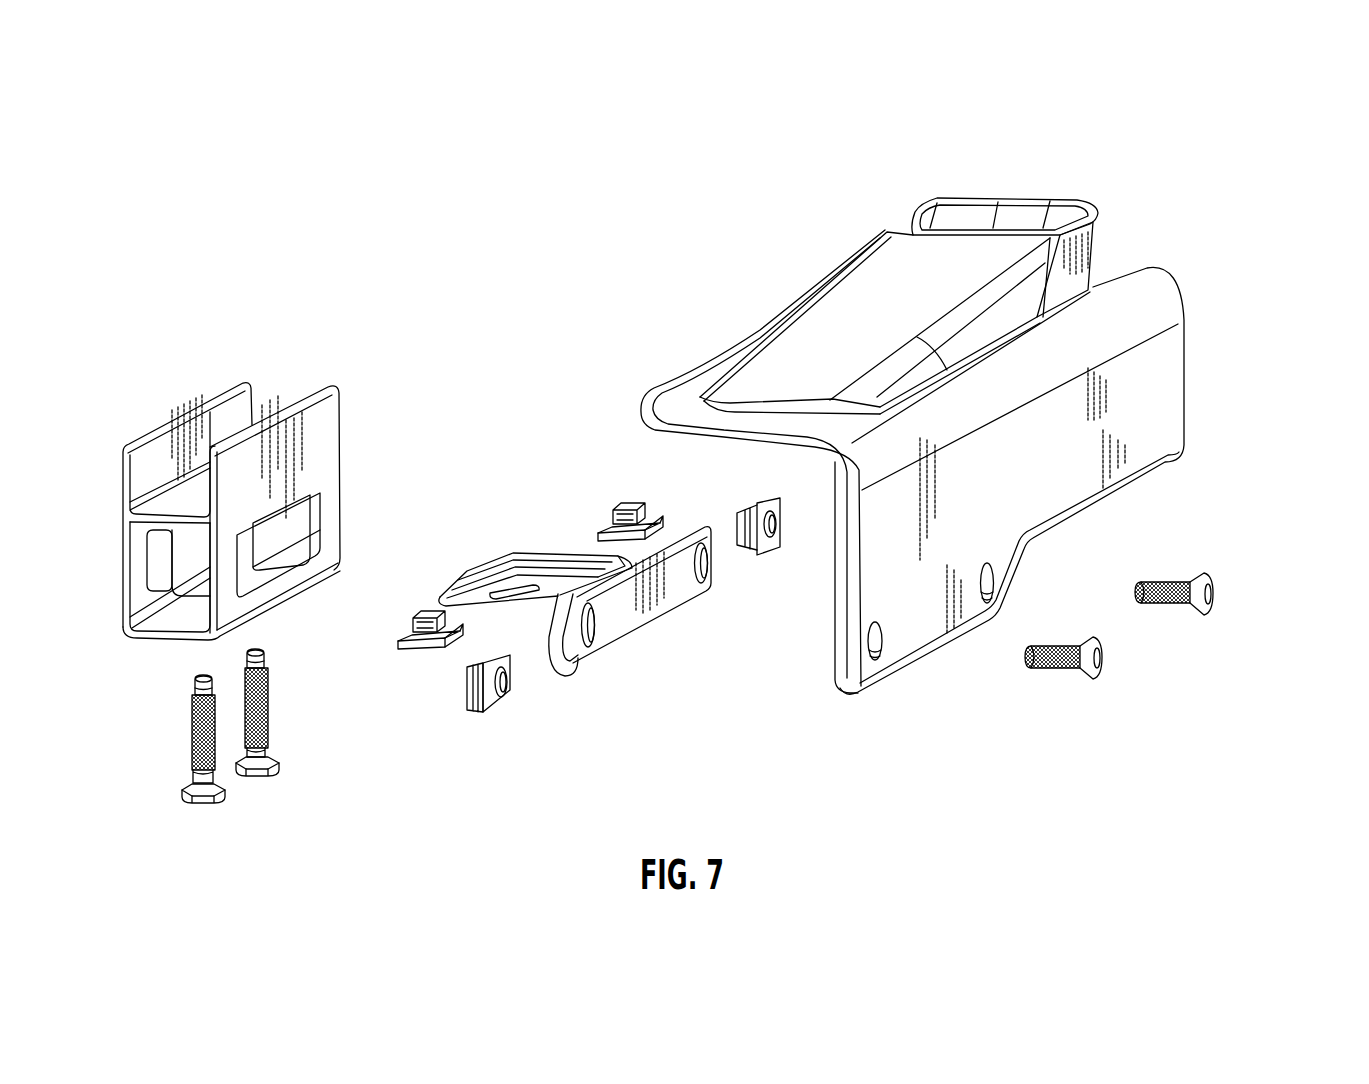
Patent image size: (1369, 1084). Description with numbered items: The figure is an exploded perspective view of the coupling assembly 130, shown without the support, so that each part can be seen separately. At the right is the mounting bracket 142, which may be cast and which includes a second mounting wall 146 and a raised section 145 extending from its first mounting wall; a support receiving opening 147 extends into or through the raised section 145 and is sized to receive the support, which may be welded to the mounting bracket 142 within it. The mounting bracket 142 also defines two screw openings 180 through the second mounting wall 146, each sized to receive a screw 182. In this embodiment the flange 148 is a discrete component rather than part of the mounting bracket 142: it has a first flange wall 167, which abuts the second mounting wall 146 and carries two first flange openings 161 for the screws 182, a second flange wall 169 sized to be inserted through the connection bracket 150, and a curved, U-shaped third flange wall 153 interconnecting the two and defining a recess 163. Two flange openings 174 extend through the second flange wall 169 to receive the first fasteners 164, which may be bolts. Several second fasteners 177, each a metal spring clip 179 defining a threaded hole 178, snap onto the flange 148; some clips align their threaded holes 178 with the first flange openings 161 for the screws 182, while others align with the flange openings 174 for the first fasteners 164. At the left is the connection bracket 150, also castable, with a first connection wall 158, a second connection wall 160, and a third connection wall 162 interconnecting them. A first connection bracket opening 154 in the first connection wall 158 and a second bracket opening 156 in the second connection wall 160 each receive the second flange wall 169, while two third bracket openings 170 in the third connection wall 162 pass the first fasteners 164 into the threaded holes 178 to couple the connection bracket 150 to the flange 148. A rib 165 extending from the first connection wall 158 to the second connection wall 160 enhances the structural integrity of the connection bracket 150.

The coupling assembly 130 is at (1272, 298).
The mounting bracket 142 is at (1163, 290).
The raised section 145 is at (887, 247).
The second mounting wall 146 is at (903, 637).
The support receiving opening 147 is at (1030, 207).
The flange 148 is at (491, 550).
The connection bracket 150 is at (186, 388).
The third flange wall 153 is at (562, 682).
The first connection bracket opening 154 is at (307, 512).
The second bracket opening 156 is at (170, 525).
The first connection wall 158 is at (325, 434).
The second connection wall 160 is at (233, 400).
The first flange opening 161 is at (702, 588).
The third connection wall 162 is at (155, 640).
The recess 163 is at (576, 666).
The first fastener 164 is at (193, 740).
The rib 165 is at (160, 510).
The first flange wall 167 is at (677, 595).
The second flange wall 169 is at (457, 583).
The third bracket opening 170 is at (200, 612).
The flange opening 174 is at (498, 603).
The second fastener 177 is at (655, 515).
The threaded hole 178 is at (627, 505).
The metal spring clip 179 is at (598, 532).
The screw opening 180 is at (993, 593).
The screw 182 is at (1167, 607).